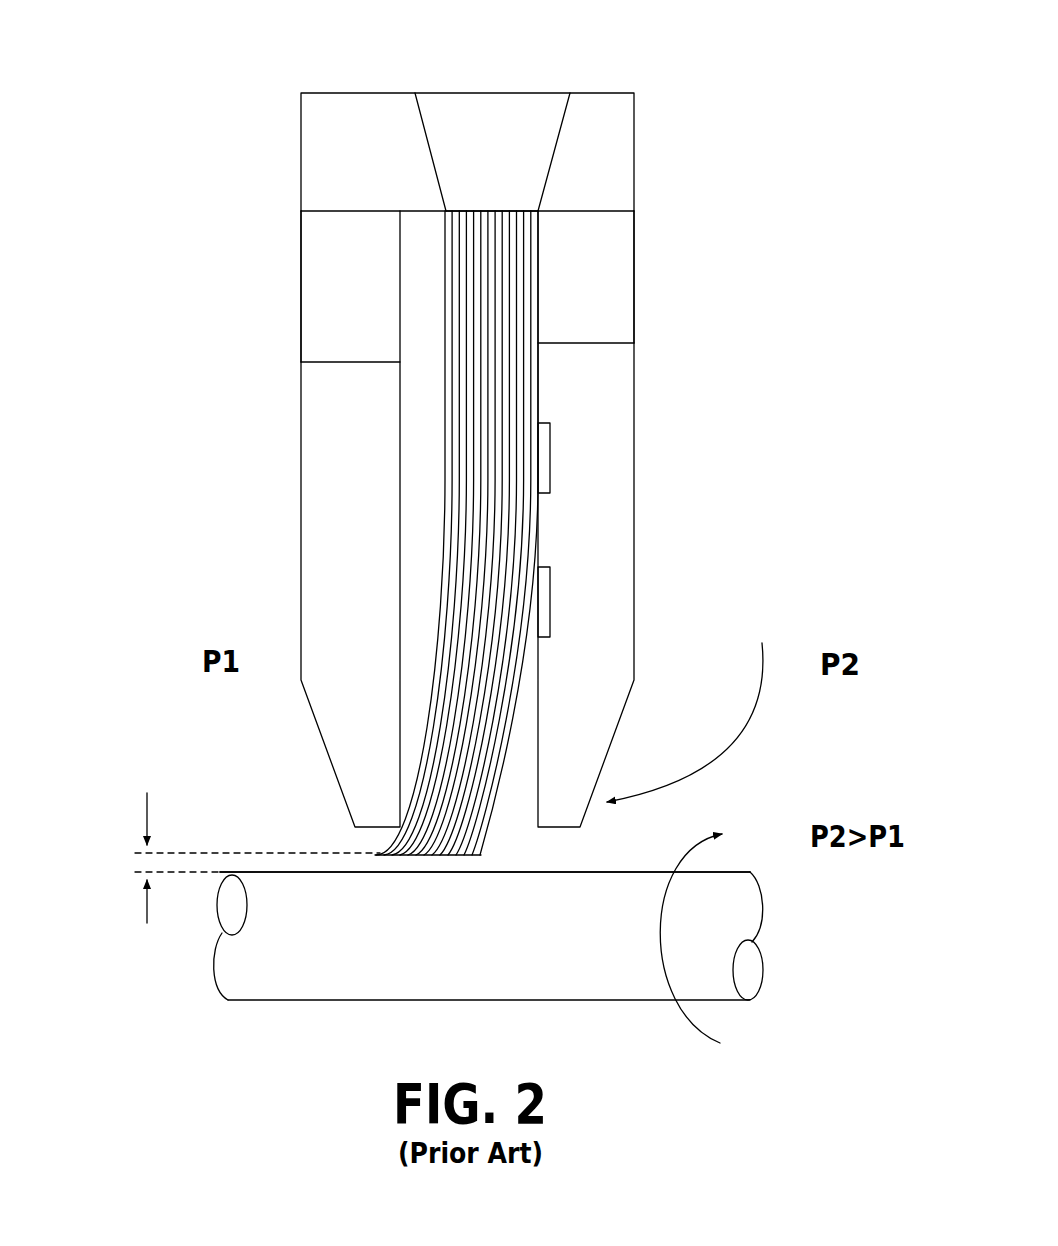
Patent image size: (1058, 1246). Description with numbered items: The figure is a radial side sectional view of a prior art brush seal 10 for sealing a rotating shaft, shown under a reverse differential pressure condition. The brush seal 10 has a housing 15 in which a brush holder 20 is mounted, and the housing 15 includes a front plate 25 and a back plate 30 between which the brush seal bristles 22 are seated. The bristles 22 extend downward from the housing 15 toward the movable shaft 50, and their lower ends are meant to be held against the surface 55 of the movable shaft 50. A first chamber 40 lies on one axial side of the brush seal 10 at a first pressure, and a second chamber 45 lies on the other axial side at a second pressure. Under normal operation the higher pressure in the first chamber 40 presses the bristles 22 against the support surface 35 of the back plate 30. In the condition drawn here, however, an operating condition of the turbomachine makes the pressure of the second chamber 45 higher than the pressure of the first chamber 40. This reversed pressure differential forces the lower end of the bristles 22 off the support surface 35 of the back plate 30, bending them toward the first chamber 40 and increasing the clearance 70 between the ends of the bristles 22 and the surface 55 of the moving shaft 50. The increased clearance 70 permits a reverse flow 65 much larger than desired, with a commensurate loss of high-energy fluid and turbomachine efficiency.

The brush seal 10 is at (698, 56).
The housing 15 is at (651, 186).
The brush holder 20 is at (527, 93).
The brush seal bristles 22 is at (492, 718).
The front plate 25 is at (338, 573).
The back plate 30 is at (620, 487).
The support surface 35 is at (538, 665).
The first chamber 40 is at (237, 523).
The second chamber 45 is at (771, 548).
The movable shaft 50 is at (606, 1000).
The surface of the movable shaft 55 is at (480, 908).
The reverse flow 65 is at (733, 740).
The clearance 70 is at (141, 862).